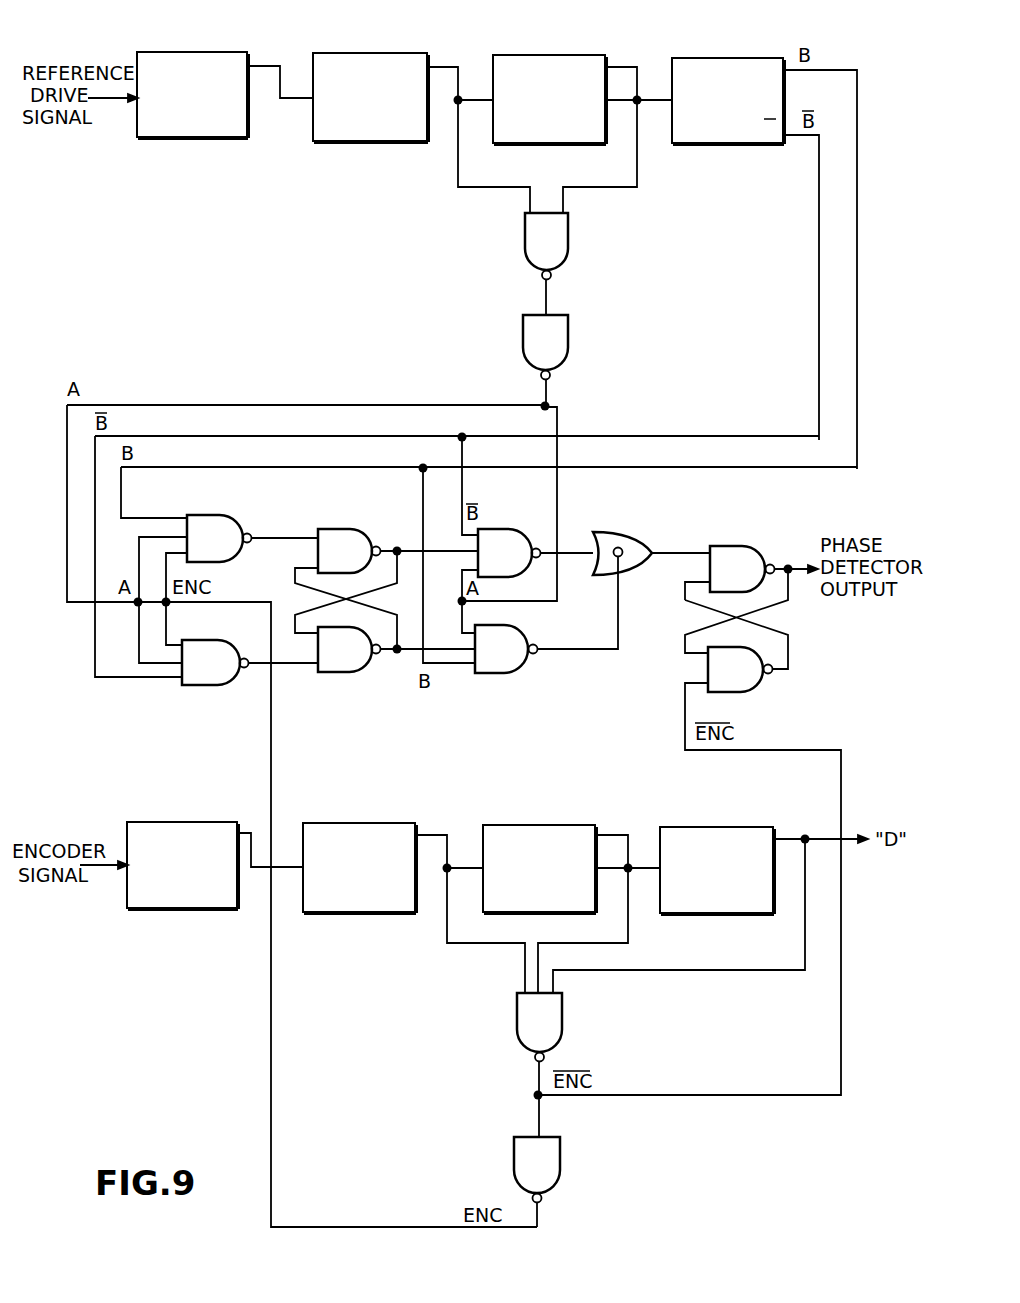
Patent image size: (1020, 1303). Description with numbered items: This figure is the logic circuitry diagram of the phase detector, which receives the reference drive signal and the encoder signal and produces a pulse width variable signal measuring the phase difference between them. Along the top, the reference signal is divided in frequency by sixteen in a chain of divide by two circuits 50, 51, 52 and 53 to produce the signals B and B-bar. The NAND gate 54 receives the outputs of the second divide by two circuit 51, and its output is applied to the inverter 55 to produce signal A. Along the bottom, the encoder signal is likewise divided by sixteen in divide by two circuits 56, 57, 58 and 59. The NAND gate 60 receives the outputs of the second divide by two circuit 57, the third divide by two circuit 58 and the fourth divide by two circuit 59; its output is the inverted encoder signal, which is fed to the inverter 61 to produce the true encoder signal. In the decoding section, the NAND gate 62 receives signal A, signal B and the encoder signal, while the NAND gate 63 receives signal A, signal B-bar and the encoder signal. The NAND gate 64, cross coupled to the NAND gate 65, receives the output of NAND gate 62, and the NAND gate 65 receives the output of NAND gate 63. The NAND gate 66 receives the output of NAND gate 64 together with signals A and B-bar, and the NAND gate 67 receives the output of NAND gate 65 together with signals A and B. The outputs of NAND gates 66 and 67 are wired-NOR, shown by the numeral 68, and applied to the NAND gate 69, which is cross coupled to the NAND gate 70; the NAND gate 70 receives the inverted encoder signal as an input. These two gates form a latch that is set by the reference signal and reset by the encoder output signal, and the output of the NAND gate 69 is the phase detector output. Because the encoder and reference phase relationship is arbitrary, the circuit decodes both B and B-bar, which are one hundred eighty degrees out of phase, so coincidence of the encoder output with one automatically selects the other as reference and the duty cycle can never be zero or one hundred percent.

The divide by two circuit 50 is at (220, 52).
The divide by two circuit 51 is at (400, 53).
The divide by two circuit 52 is at (578, 55).
The divide by two circuit 53 is at (750, 58).
The NAND gate 54 is at (568, 238).
The inverter 55 is at (568, 342).
The divide by two circuit 56 is at (196, 822).
The divide by two circuit 57 is at (352, 823).
The divide by two circuit 58 is at (542, 825).
The divide by two circuit 59 is at (720, 827).
The NAND gate 60 is at (517, 1028).
The inverter 61 is at (514, 1150).
The NAND gate 62 is at (236, 508).
The NAND gate 63 is at (236, 633).
The NAND gate 64 is at (352, 529).
The NAND gate 65 is at (345, 672).
The NAND gate 66 is at (512, 529).
The NAND gate 67 is at (518, 673).
The wired-NOR 68 is at (632, 532).
The NAND gate 69 is at (740, 546).
The NAND gate 70 is at (760, 684).